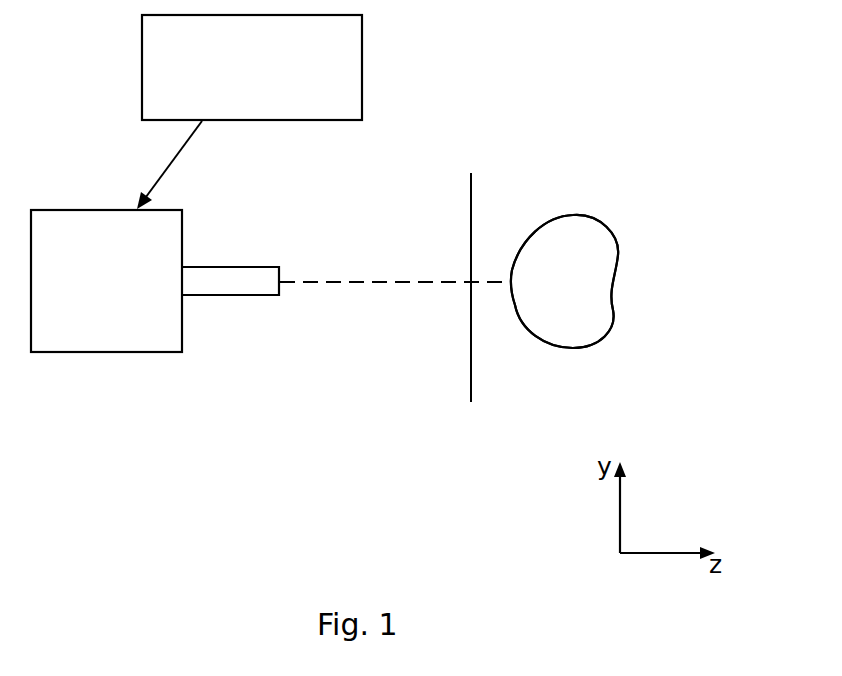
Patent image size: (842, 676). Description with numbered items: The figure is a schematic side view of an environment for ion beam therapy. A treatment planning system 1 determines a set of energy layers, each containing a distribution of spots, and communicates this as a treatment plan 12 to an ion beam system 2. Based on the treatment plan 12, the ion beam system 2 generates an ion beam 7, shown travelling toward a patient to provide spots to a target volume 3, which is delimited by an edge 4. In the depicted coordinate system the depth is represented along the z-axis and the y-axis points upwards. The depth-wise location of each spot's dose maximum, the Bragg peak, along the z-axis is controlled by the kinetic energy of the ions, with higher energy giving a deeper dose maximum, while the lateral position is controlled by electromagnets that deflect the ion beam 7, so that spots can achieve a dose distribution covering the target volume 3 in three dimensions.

The treatment planning system 1 is at (249, 112).
The treatment plan 12 is at (163, 172).
The ion beam system 2 is at (225, 265).
The ion beam 7 is at (332, 283).
The target volume 3 is at (583, 250).
The edge 4 is at (615, 330).